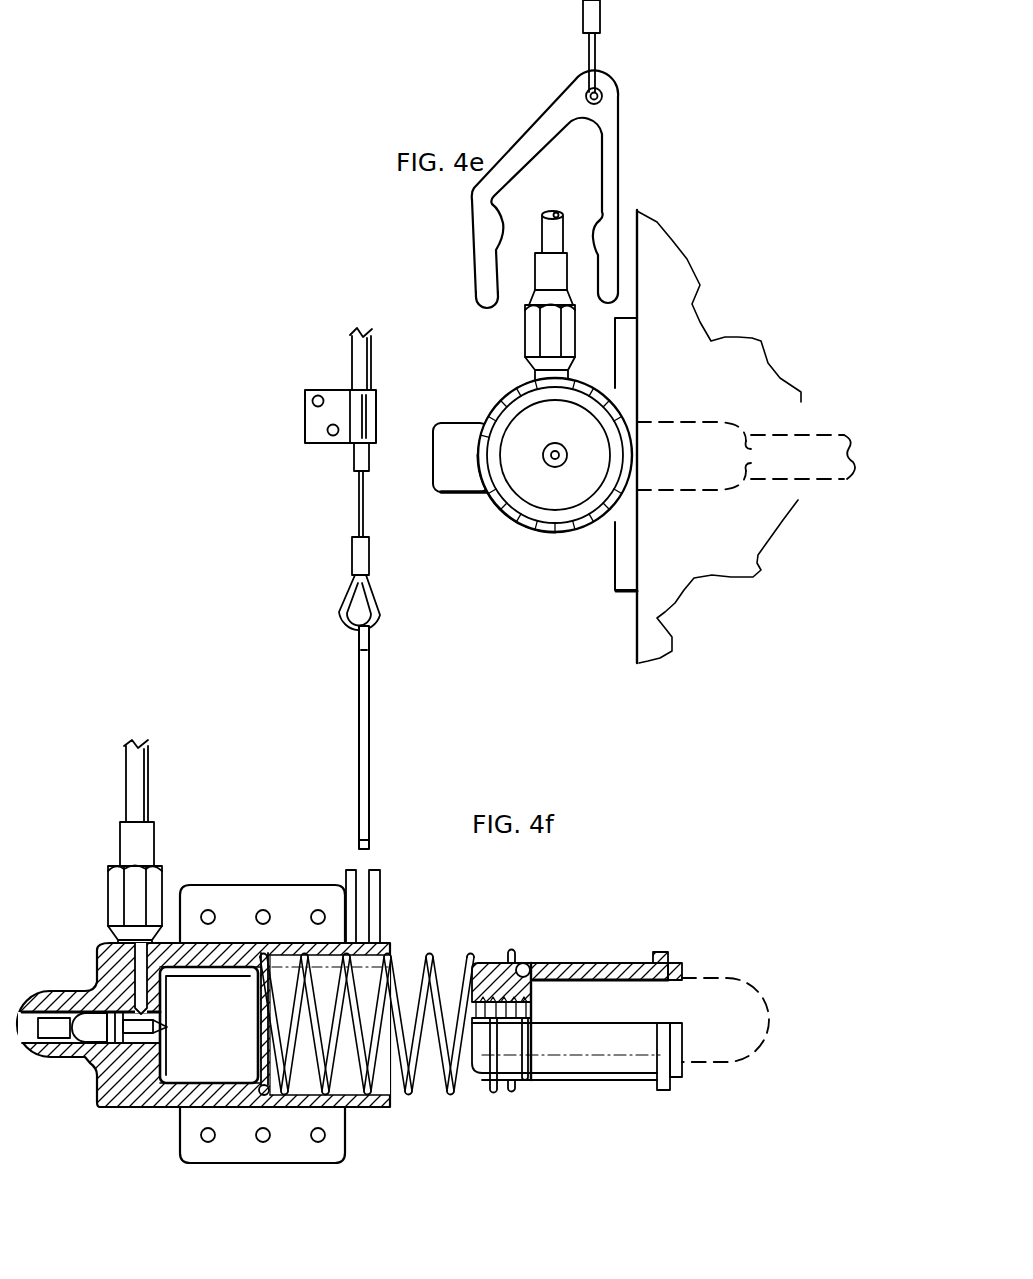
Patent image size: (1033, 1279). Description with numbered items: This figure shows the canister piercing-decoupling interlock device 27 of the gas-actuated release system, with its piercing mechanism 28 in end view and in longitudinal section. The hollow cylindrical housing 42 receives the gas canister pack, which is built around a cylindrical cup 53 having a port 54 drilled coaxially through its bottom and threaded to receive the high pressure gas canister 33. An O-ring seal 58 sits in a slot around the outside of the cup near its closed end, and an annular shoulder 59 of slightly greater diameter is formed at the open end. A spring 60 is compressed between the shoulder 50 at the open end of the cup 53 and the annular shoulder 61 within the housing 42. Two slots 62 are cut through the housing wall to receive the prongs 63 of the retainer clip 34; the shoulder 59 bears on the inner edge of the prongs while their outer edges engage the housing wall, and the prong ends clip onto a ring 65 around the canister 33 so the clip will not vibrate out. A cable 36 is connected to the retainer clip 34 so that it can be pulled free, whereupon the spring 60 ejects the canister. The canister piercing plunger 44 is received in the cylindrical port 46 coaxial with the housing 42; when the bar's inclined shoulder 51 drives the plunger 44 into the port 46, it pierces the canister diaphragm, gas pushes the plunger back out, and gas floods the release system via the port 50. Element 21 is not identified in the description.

In FIG. 4E, the cable 21 is at (543, 229).
In FIG. 4F, the cable 21 is at (149, 788).
In FIG. 4F, the canister piercing-decoupling interlock device 27 is at (244, 880).
In FIG. 4E, the piercing mechanism 28 is at (452, 430).
In FIG. 4F, the gas canister 33 is at (728, 987).
In FIG. 4E, the retainer clip 34 is at (613, 117).
In FIG. 4E, the cable 36 is at (365, 520).
In FIG. 4E, the hollow cylindrical housing 42 is at (528, 390).
In FIG. 4F, the hollow cylindrical housing 42 is at (283, 944).
In FIG. 4E, the canister piercing plunger 44 is at (566, 452).
In FIG. 4F, the canister piercing plunger 44 is at (158, 1026).
In FIG. 4E, the cylindrical port 46 is at (559, 462).
In FIG. 4F, the port 50 is at (135, 968).
In FIG. 4F, the inclined shoulder 51 is at (67, 1022).
In FIG. 4F, the cylindrical cup 53 is at (603, 963).
In FIG. 4F, the port 54 is at (567, 1005).
In FIG. 4F, the O-ring seal 58 is at (524, 964).
In FIG. 4F, the annular shoulder 59 is at (667, 952).
In FIG. 4F, the spring 60 is at (432, 957).
In FIG. 4F, the annular shoulder 61 is at (263, 1083).
In FIG. 4E, the slots 62 is at (622, 505).
In FIG. 4E, the prongs 63 is at (481, 289).
In FIG. 4F, the ring 65 is at (682, 968).